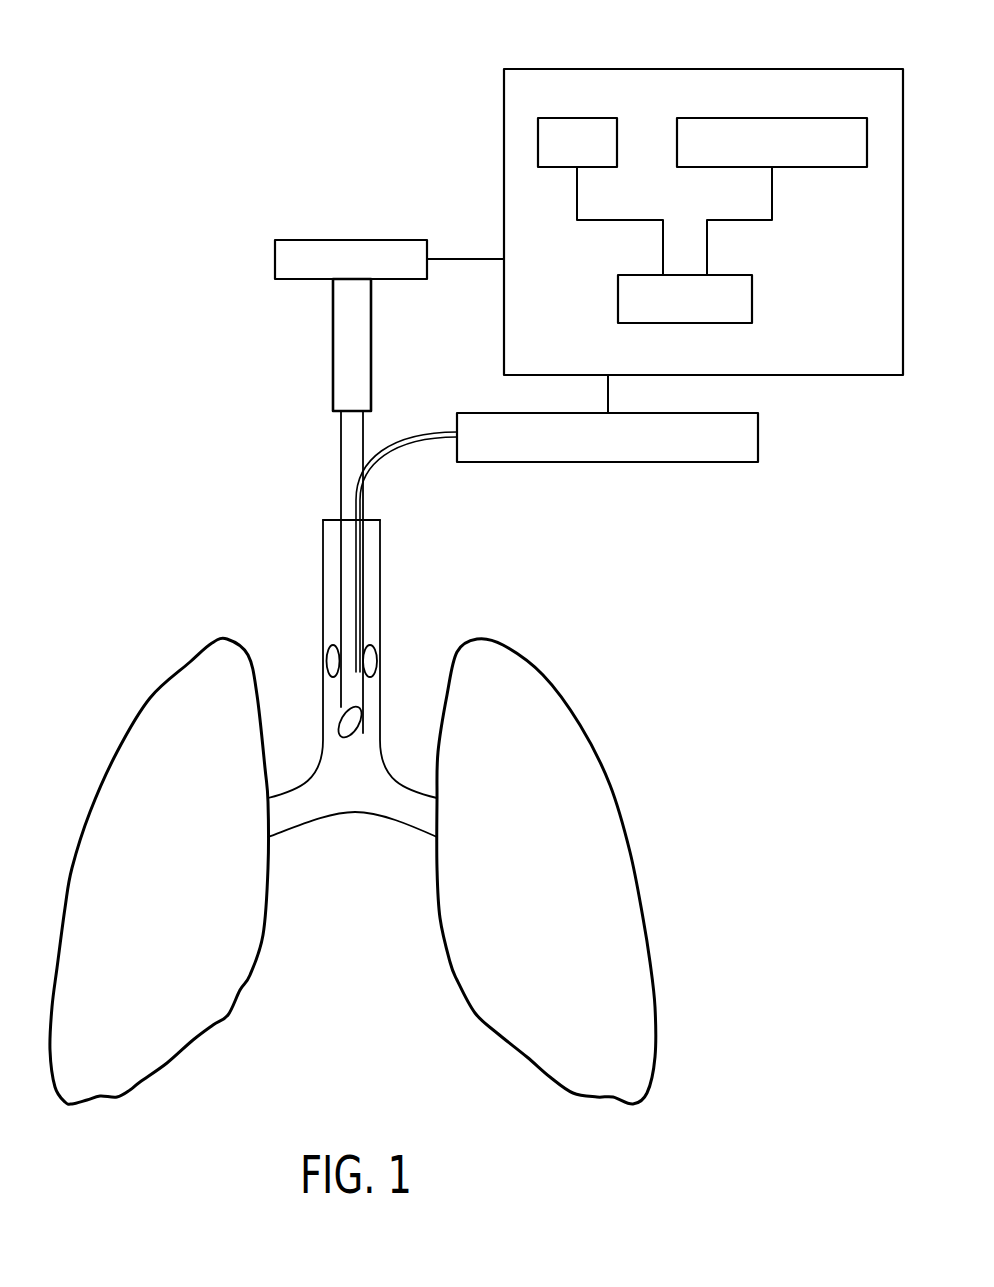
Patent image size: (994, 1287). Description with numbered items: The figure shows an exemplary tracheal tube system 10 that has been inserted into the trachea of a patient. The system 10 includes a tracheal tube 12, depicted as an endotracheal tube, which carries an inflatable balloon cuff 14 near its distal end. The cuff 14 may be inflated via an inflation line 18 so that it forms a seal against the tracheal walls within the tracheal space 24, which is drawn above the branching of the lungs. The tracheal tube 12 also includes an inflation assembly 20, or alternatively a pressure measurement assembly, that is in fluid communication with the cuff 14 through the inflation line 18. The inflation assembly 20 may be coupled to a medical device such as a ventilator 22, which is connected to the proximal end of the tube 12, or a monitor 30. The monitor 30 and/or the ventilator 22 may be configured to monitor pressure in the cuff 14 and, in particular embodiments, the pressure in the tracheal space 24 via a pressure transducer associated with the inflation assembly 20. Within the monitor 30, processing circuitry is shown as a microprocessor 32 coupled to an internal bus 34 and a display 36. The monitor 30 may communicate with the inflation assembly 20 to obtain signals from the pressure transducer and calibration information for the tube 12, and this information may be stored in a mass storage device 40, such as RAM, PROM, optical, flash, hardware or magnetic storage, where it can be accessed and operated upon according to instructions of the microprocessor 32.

The tracheal tube system 10 is at (273, 108).
The tracheal tube 12 is at (348, 507).
The inflatable balloon cuff 14 is at (379, 647).
The inflation line 18 is at (382, 453).
The inflation assembly 20 is at (758, 437).
The ventilator 22 is at (275, 259).
The tracheal space 24 is at (343, 773).
The monitor 30 is at (702, 69).
The microprocessor 32 is at (577, 118).
The internal bus 34 is at (623, 220).
The display 36 is at (752, 300).
The mass storage device 40 is at (772, 118).